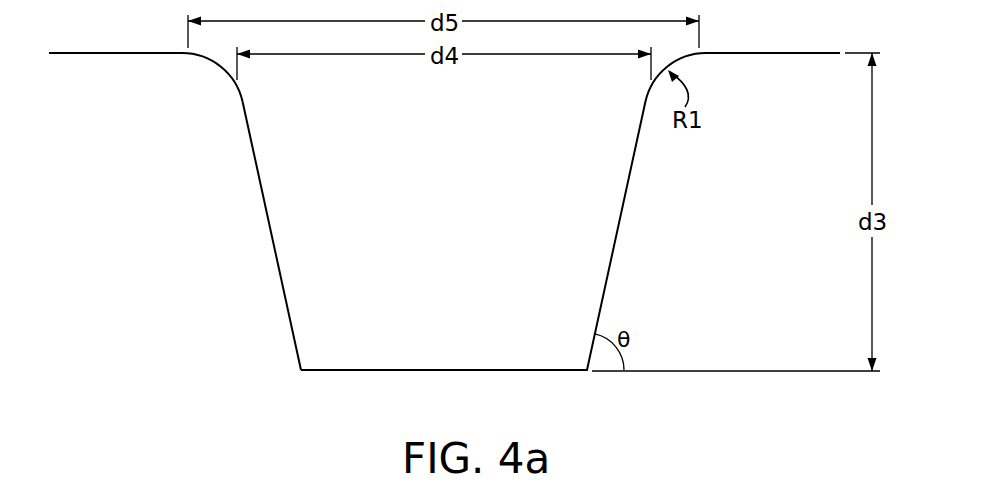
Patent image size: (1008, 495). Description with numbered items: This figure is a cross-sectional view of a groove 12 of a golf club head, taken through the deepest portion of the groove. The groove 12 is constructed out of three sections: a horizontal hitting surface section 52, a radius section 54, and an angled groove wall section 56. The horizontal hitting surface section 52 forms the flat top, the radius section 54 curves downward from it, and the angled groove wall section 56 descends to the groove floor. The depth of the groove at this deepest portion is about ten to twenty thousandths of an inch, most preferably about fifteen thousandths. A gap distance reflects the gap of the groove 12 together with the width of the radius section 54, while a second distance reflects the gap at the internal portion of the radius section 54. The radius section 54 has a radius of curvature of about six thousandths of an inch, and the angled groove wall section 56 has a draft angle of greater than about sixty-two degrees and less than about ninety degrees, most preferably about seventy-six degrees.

The groove 12 is at (307, 287).
The horizontal hitting surface section 52 is at (102, 55).
The radius section 54 is at (212, 63).
The angled groove wall section 56 is at (267, 223).